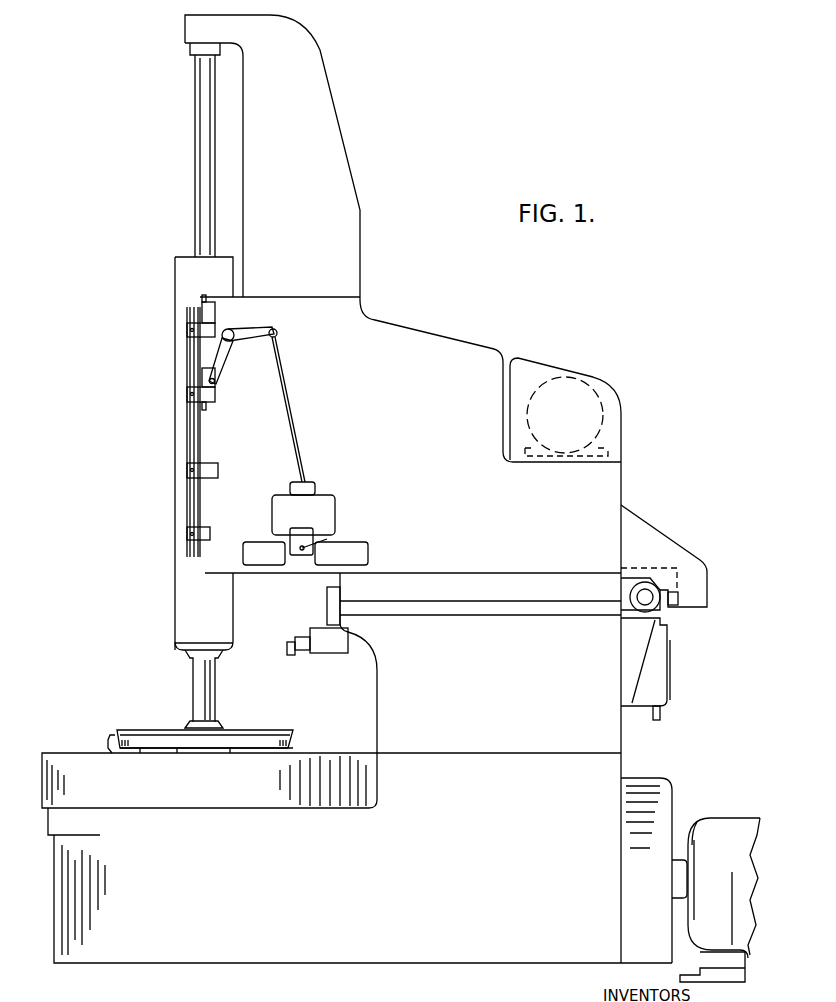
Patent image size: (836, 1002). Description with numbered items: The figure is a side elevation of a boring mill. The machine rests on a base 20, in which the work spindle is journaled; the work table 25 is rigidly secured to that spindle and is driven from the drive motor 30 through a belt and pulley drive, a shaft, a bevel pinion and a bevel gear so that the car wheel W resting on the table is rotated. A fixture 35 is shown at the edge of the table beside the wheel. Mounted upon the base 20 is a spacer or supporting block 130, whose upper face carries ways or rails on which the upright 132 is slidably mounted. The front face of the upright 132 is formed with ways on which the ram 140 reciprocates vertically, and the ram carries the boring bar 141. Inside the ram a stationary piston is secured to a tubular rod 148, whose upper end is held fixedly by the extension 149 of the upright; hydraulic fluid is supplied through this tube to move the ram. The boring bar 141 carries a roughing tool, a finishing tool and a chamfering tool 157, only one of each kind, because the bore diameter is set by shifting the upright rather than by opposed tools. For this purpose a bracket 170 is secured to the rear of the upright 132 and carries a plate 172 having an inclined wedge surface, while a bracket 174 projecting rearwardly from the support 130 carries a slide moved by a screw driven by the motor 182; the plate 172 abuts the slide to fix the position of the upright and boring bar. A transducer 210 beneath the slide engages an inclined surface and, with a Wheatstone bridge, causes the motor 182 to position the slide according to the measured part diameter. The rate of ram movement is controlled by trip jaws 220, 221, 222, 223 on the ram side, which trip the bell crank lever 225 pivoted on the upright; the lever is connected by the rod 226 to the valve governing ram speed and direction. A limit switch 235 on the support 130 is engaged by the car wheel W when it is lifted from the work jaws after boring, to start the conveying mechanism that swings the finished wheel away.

The base 20 is at (405, 964).
The work table 25 is at (312, 760).
The drive motor 30 is at (730, 830).
The work locator 35 is at (110, 738).
The car wheel W is at (270, 731).
The supporting block 130 is at (606, 728).
The upright 132 is at (465, 352).
The ram 140 is at (185, 270).
The boring bar 141 is at (210, 695).
The tubular rod 148 is at (196, 143).
The extension 149 is at (320, 58).
The chamfering tool 157 is at (192, 687).
The bracket 170 is at (666, 545).
The plate 172 is at (670, 605).
The bracket 174 is at (623, 666).
The motor 182 is at (636, 596).
The transducer 210 is at (660, 700).
The trip jaw 220 is at (206, 535).
The trip jaw 221 is at (216, 470).
The trip jaw 222 is at (187, 398).
The trip jaw 223 is at (215, 331).
The bell crank lever 225 is at (234, 340).
The rod 226 is at (295, 422).
The limit switch 235 is at (296, 655).